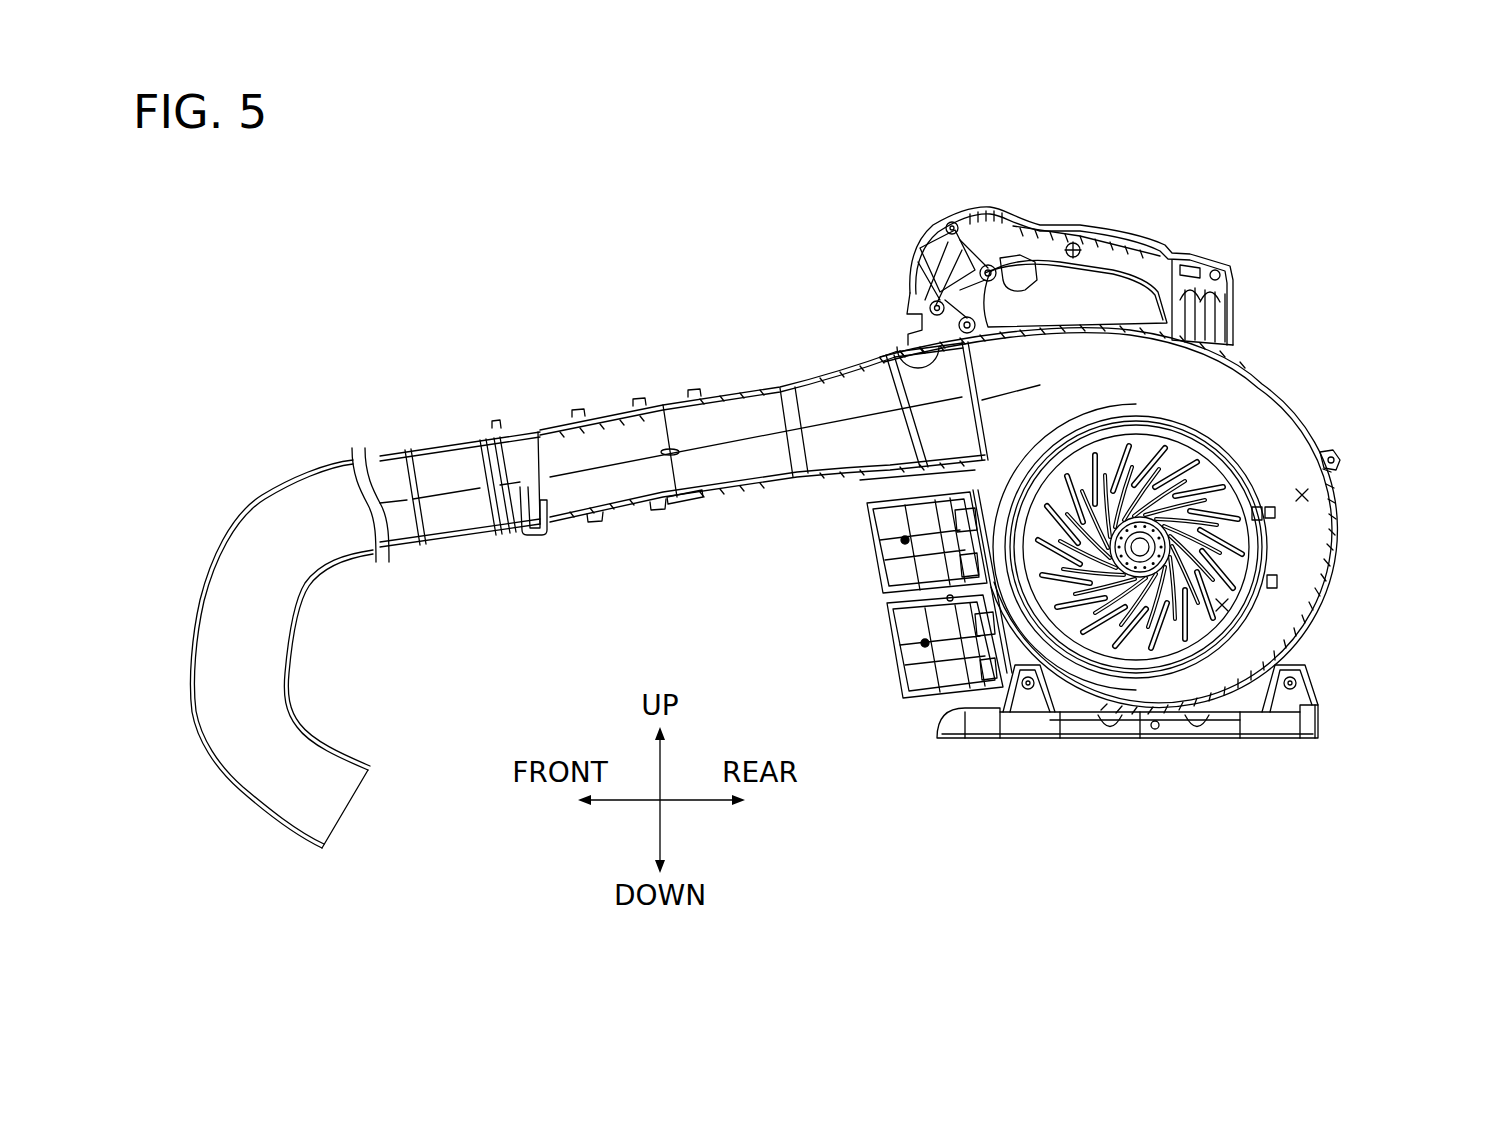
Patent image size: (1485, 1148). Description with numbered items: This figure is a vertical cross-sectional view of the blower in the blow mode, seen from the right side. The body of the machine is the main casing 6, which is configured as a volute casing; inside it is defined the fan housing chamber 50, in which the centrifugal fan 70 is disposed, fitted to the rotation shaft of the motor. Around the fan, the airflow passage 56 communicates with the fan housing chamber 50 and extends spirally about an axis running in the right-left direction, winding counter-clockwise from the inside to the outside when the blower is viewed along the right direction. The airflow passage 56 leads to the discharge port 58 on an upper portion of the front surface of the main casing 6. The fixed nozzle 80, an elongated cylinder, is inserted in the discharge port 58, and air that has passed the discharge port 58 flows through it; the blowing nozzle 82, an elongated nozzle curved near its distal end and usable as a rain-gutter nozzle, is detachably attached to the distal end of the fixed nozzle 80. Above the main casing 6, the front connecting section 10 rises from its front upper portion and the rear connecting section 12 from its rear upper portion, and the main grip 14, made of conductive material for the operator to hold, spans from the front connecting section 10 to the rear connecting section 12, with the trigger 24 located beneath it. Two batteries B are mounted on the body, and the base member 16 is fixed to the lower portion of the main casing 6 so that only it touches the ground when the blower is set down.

The main casing 6 is at (1302, 418).
The front connecting section 10 is at (910, 275).
The rear connecting section 12 is at (1237, 300).
The main grip 14 is at (1087, 238).
The base member 16 is at (945, 718).
The trigger 24 is at (1017, 262).
The fan housing chamber 50 is at (1222, 605).
The airflow passage 56 is at (1302, 495).
The discharge port 58 is at (905, 332).
The centrifugal fan 70 is at (1252, 527).
The fixed nozzle 80 is at (712, 387).
The blowing nozzle 82 is at (496, 425).
The battery B is at (885, 640).